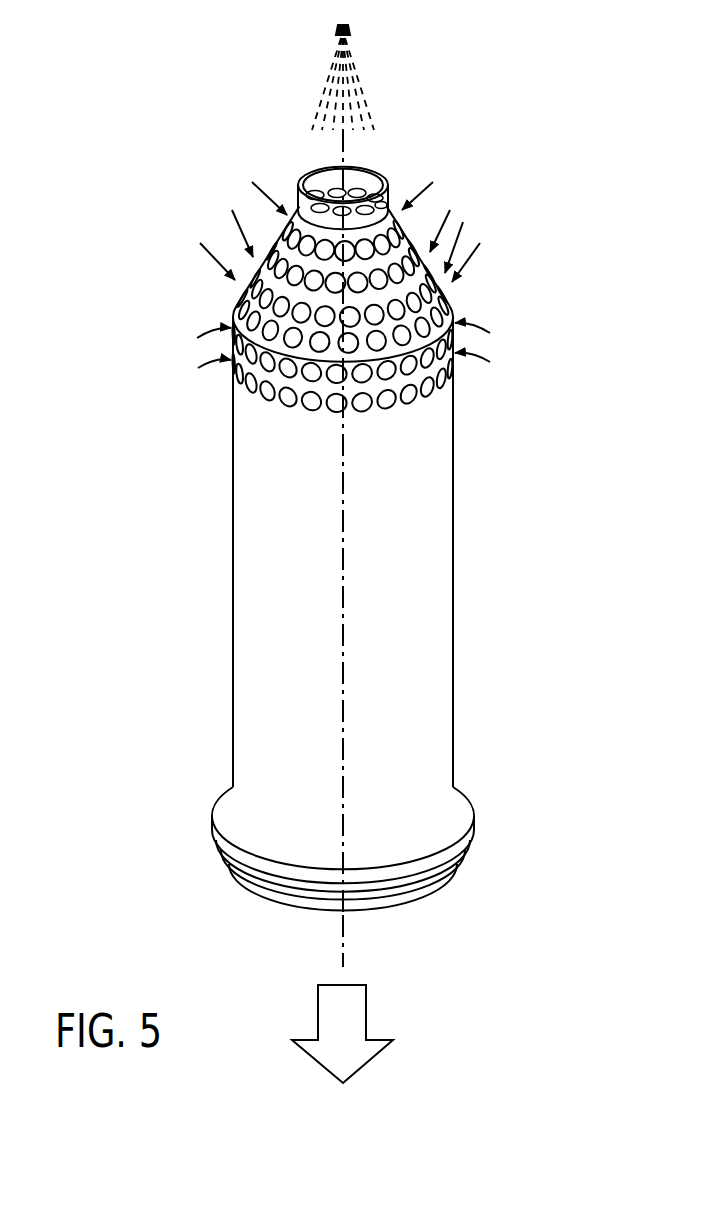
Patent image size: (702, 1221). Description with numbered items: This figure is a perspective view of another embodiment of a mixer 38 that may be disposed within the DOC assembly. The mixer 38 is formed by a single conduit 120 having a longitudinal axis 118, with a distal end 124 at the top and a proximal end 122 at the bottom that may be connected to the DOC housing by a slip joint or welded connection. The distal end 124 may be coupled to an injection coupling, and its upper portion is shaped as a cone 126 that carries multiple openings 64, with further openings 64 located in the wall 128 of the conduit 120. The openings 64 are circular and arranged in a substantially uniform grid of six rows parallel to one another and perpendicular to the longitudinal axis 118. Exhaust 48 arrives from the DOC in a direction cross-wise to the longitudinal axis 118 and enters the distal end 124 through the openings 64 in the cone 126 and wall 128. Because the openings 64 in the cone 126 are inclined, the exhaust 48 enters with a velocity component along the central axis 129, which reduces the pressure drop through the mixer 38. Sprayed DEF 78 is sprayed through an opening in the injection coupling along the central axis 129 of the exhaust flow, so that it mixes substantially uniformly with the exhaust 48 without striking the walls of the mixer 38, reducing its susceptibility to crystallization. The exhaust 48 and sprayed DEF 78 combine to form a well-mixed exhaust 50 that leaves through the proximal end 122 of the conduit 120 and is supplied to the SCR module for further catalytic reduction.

The mixer 38 is at (138, 538).
The sprayed DEF 78 is at (358, 78).
The distal end 124 is at (378, 178).
The exhaust 48 is at (265, 247).
The cone 126 is at (455, 295).
The openings 64 is at (432, 377).
The wall 128 is at (454, 512).
The conduit 120 is at (454, 670).
The central axis 129 is at (343, 584).
The proximal end 122 is at (466, 877).
The longitudinal axis 118 is at (344, 943).
The well-mixed exhaust 50 is at (354, 1038).